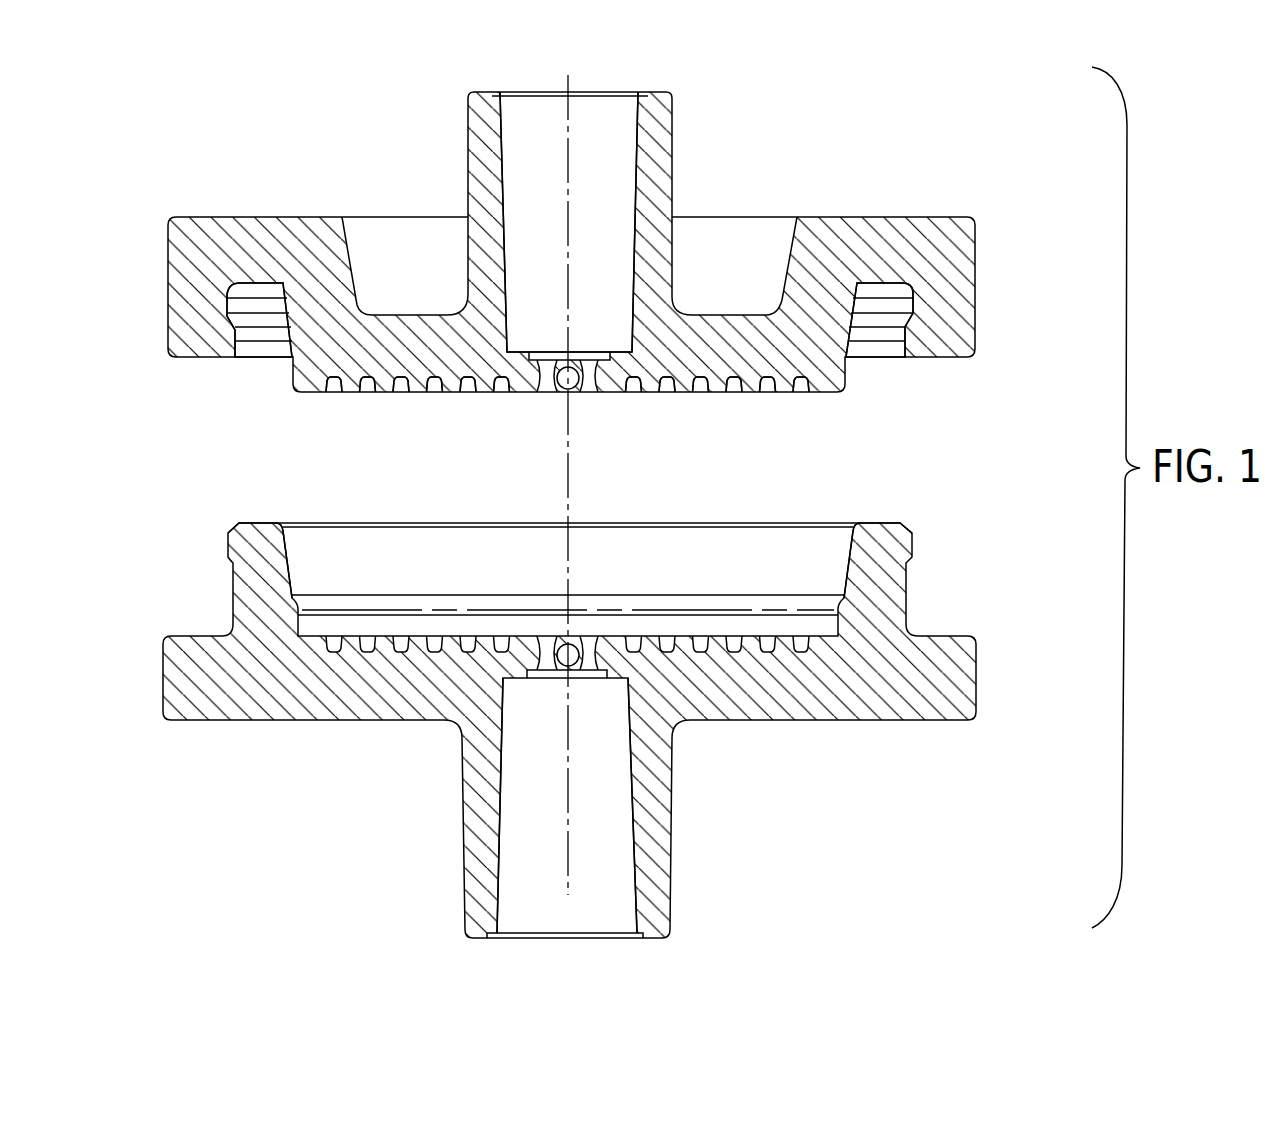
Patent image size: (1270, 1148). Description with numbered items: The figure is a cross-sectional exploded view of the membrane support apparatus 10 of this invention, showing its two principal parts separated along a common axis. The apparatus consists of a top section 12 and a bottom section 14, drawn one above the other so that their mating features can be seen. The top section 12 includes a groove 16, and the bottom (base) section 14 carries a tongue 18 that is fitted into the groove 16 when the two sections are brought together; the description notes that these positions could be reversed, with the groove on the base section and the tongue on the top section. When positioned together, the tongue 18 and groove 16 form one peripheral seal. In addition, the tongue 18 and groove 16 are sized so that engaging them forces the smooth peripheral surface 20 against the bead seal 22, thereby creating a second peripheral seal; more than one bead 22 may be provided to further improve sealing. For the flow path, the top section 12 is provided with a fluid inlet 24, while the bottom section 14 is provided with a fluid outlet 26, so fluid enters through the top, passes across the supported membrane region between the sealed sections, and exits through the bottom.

The membrane support apparatus 10 is at (899, 144).
The top section 12 is at (905, 230).
The bottom section 14 is at (943, 633).
The groove 16 is at (902, 308).
The tongue 18 is at (913, 535).
The smooth peripheral surface 20 is at (843, 380).
The bead seal 22 is at (325, 606).
The fluid inlet 24 is at (623, 141).
The fluid outlet 26 is at (600, 810).